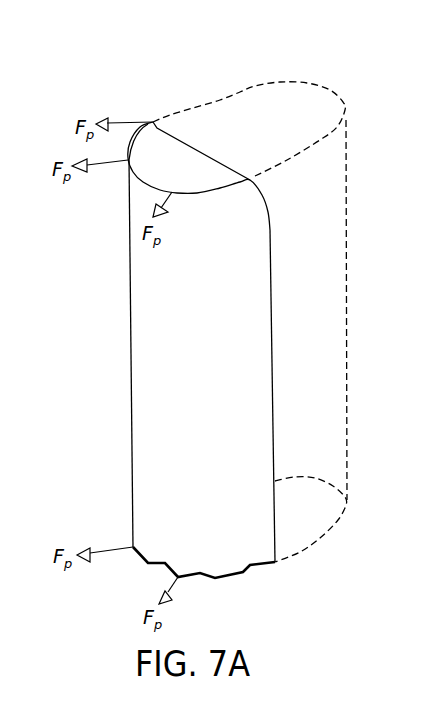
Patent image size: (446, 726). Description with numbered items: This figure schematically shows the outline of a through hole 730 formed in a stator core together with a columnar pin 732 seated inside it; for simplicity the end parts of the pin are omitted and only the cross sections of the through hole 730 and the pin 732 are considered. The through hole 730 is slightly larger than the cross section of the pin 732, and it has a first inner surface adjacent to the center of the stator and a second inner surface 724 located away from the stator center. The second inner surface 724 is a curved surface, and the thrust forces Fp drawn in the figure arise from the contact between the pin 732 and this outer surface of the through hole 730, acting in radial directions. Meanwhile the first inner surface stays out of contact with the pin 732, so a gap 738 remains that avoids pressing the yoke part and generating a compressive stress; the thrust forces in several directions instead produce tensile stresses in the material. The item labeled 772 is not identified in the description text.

The second inner surface 724 is at (137, 175).
The through hole 730 is at (333, 91).
The columnar pin 732 is at (141, 379).
The gap 738 is at (285, 112).
The cut plane 772 is at (320, 102).